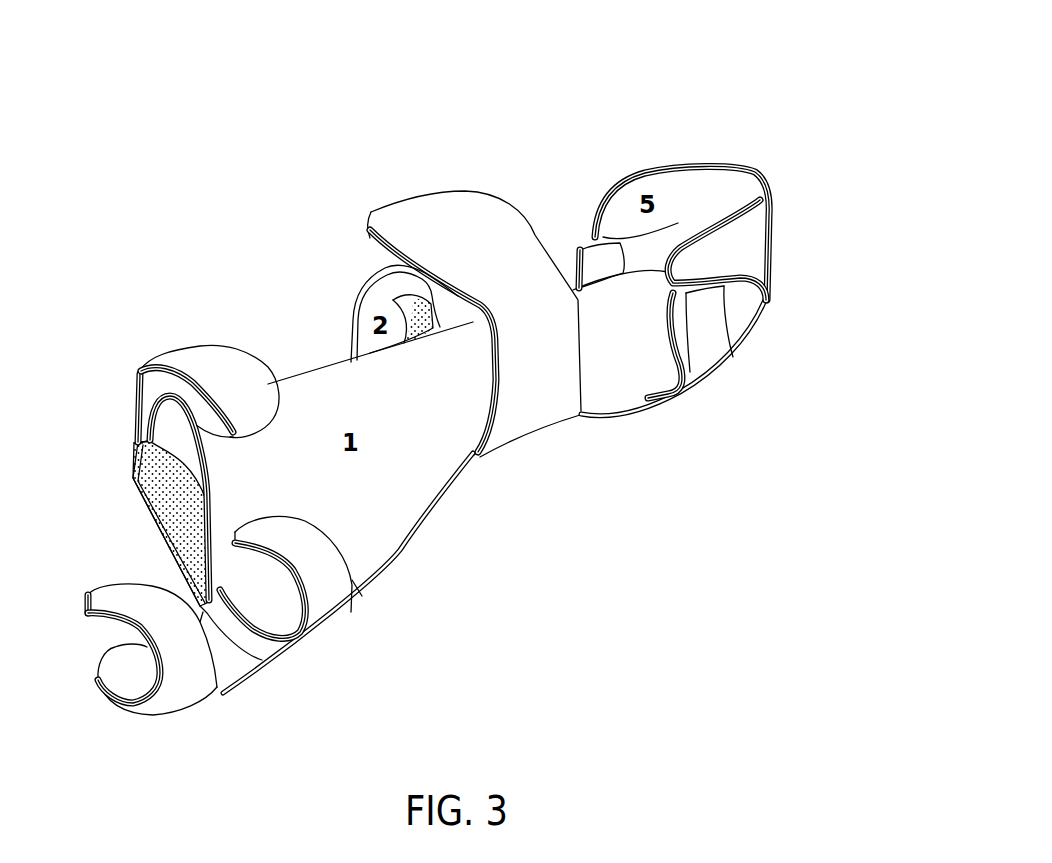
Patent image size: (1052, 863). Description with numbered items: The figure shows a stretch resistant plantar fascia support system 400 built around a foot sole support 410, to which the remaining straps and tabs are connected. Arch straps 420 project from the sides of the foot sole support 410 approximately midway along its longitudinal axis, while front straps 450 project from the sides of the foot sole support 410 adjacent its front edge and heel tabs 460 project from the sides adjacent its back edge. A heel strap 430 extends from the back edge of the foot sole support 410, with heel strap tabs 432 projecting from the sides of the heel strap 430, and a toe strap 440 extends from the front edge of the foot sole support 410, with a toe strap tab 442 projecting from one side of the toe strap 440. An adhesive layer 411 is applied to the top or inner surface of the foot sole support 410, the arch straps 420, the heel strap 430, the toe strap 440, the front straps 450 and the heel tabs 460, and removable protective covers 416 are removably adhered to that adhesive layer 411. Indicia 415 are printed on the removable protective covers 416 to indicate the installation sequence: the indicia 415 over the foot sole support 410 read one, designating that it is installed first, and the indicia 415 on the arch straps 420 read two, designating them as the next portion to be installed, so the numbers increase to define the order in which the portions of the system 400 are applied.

The stretch resistant plantar fascia support system 400 is at (688, 84).
The foot sole support 410 is at (160, 540).
The adhesive layer 411 is at (140, 470).
The indicia 415 is at (337, 440).
The removable protective covers 416 is at (153, 407).
The arch straps 420 is at (460, 210).
The heel strap 430 is at (770, 226).
The heel strap tabs 432 is at (657, 170).
The toe strap 440 is at (262, 670).
The toe strap tab 442 is at (200, 693).
The front straps 450 is at (210, 347).
The heel tabs 460 is at (578, 250).